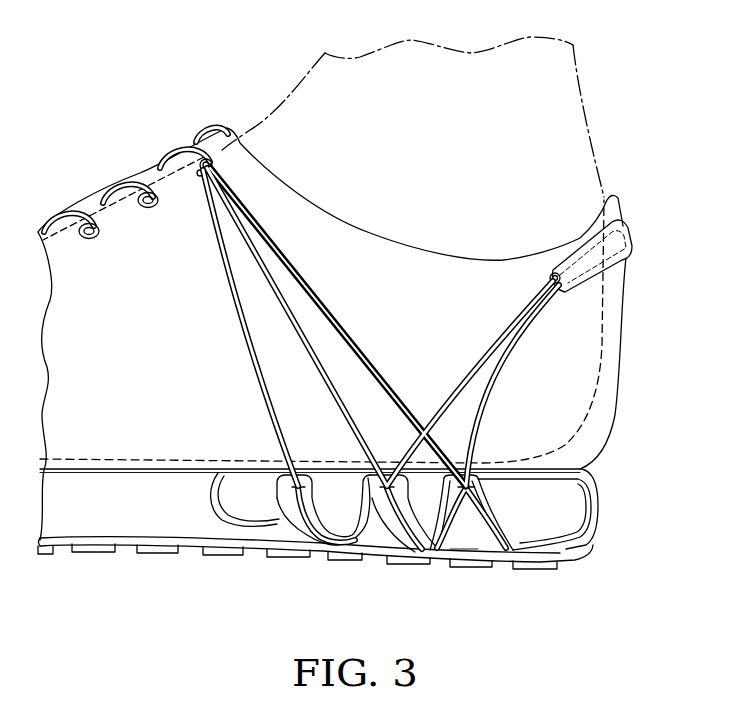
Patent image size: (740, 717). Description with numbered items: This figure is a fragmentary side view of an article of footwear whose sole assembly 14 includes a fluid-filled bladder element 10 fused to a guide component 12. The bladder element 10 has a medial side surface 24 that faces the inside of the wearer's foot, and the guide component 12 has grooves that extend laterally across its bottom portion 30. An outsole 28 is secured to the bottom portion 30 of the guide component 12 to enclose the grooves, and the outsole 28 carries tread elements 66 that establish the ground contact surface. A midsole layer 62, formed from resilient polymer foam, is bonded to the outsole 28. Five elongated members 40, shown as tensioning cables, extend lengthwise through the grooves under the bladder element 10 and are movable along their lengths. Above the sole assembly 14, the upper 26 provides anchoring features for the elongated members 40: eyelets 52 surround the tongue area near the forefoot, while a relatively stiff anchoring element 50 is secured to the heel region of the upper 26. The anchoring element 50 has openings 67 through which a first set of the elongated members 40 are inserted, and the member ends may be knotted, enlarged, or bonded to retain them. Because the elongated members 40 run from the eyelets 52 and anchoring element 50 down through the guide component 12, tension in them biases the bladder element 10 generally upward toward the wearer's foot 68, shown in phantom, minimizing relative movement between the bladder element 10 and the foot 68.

The fluid-filled bladder element 10 is at (575, 503).
The guide component 12 is at (473, 537).
The sole assembly 14 is at (607, 465).
The medial side surface 24 is at (553, 510).
The upper 26 is at (618, 383).
The outsole 28 is at (587, 543).
The bottom portion 30 is at (320, 557).
The elongated members 40 is at (252, 372).
The anchoring element 50 is at (633, 240).
The eyelets 52 is at (204, 158).
The midsole layer 62 is at (133, 502).
The tread elements 66 is at (557, 563).
The openings 67 is at (555, 272).
The foot 68 is at (592, 127).